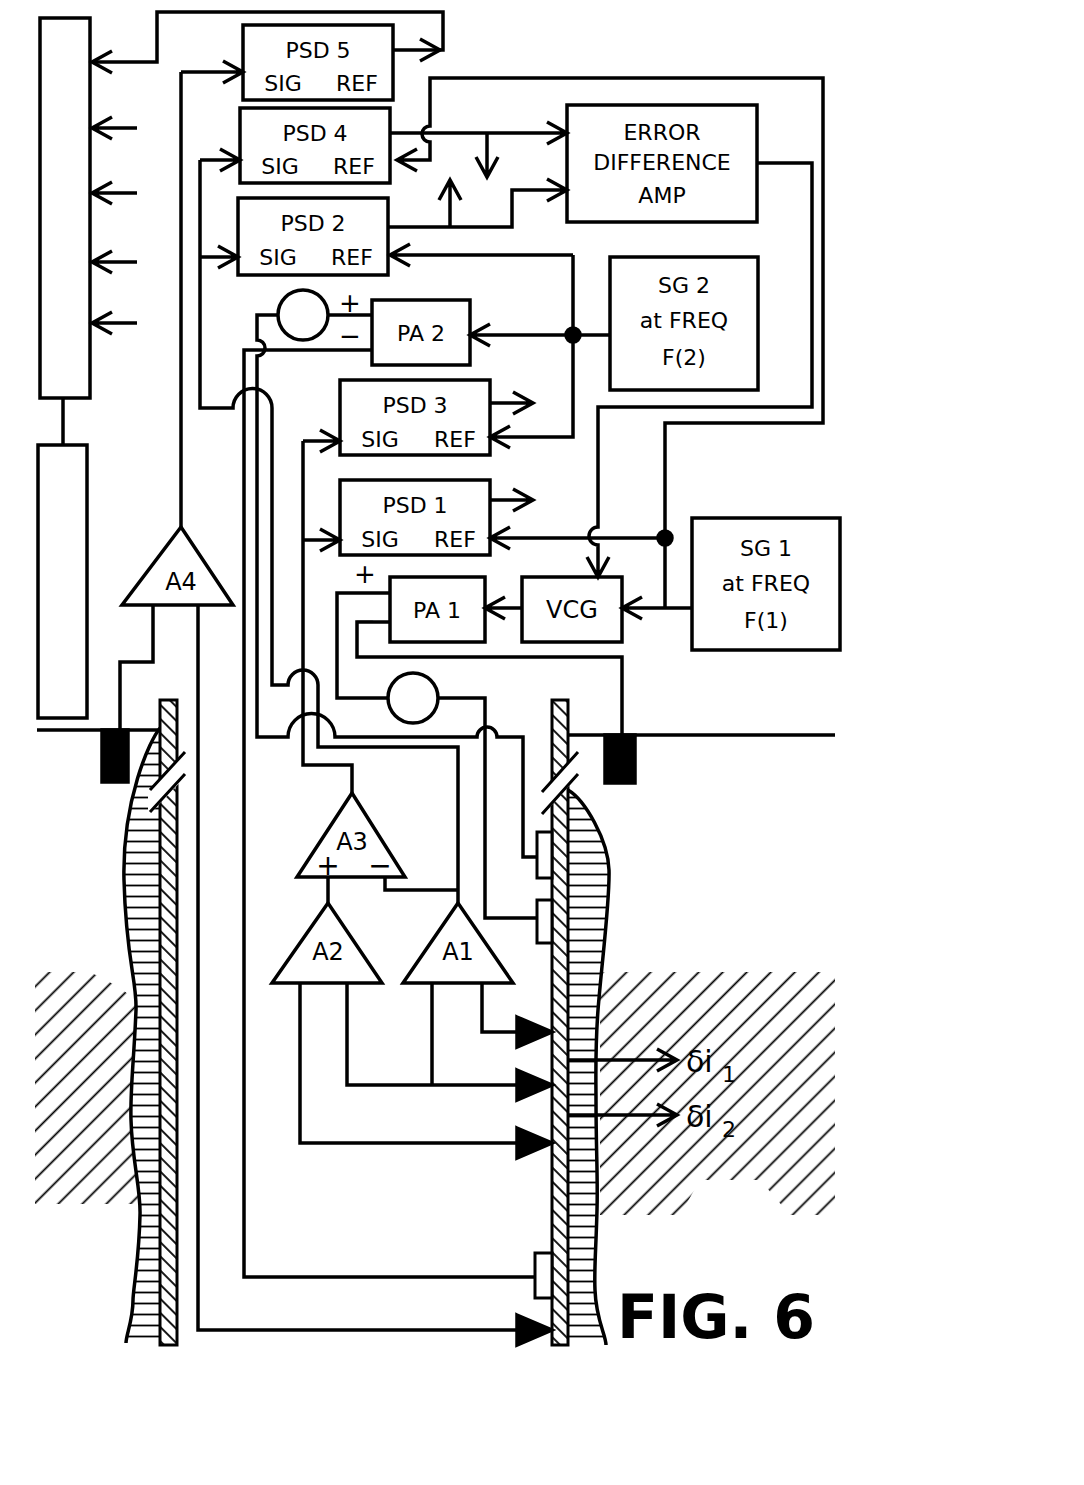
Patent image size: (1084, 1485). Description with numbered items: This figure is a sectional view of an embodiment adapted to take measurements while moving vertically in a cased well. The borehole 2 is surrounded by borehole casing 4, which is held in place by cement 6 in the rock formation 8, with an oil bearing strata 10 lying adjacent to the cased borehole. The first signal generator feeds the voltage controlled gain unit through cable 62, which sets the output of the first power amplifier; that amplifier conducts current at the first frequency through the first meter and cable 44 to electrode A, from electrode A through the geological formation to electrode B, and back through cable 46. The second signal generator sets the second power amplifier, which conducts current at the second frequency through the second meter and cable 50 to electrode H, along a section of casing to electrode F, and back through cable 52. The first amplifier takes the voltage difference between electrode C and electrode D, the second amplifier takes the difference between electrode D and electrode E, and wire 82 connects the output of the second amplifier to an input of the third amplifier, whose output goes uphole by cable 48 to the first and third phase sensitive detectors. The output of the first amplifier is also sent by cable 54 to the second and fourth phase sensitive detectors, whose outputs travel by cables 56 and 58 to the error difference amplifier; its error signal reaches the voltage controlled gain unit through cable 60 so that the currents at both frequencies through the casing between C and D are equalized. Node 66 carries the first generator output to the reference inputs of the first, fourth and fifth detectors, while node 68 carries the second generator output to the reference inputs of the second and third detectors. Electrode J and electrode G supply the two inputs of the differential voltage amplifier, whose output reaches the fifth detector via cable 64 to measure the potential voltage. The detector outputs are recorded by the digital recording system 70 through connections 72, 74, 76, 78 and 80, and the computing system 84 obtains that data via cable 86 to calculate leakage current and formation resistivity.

The borehole 2 is at (350, 1182).
The borehole casing 4 is at (562, 1175).
The cement 6 is at (590, 905).
The rock formation 8 is at (683, 1243).
The oil bearing strata 10 is at (676, 1185).
The cable 44 is at (487, 720).
The cable 46 is at (622, 703).
The cable 48 is at (297, 750).
The cable 50 is at (263, 313).
The cable 52 is at (241, 463).
The cable 54 is at (457, 838).
The cable 56 is at (548, 188).
The cable 58 is at (548, 130).
The cable 60 is at (812, 258).
The cable 62 is at (660, 615).
The cable 64 is at (181, 473).
The voltage node 66 is at (660, 538).
The voltage node 68 is at (570, 330).
The digital recording system 70 is at (90, 355).
The connection 72 is at (128, 60).
The connection 74 is at (331, 316).
The connection 76 is at (331, 301).
The connection 78 is at (295, 206).
The connection 80 is at (300, 259).
The wire 82 is at (325, 890).
The computing system 84 is at (87, 490).
The cable 86 is at (65, 420).
The electrode A is at (533, 920).
The electrode B is at (637, 770).
The electrode C is at (519, 1019).
The electrode D is at (519, 1072).
The electrode E is at (520, 1129).
The electrode F is at (540, 1262).
The electrode G is at (108, 782).
The electrode H is at (533, 855).
The electrode J is at (530, 1325).